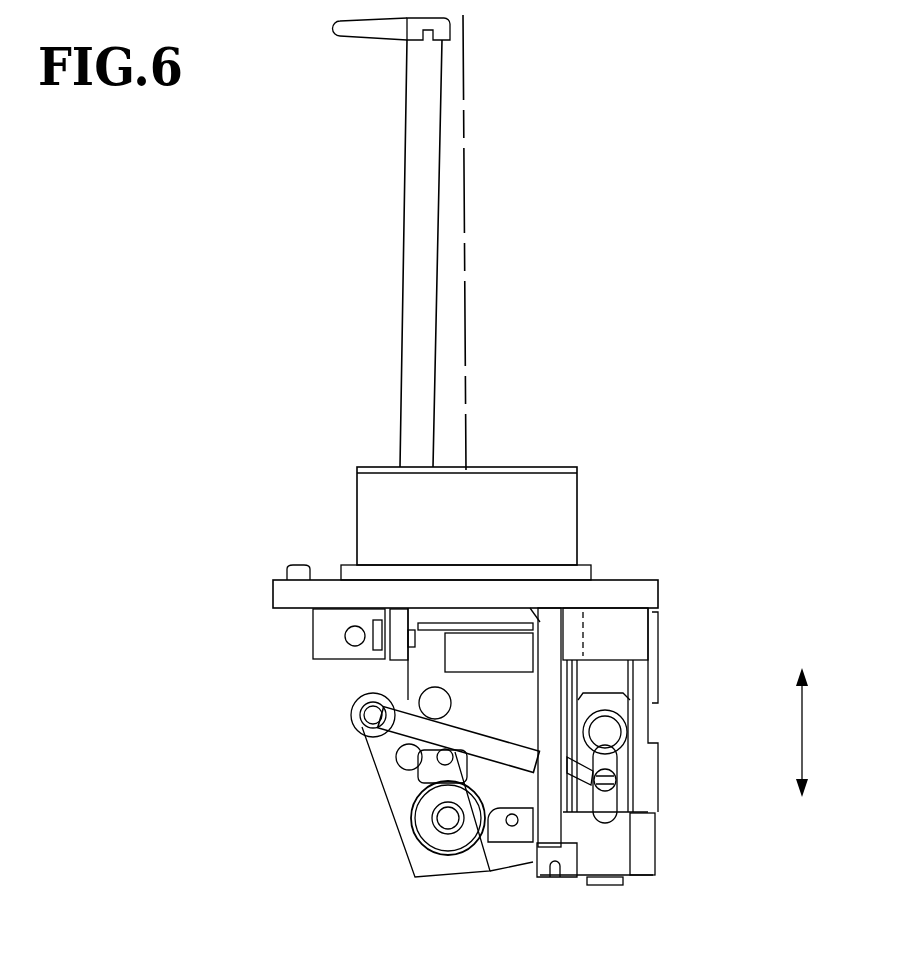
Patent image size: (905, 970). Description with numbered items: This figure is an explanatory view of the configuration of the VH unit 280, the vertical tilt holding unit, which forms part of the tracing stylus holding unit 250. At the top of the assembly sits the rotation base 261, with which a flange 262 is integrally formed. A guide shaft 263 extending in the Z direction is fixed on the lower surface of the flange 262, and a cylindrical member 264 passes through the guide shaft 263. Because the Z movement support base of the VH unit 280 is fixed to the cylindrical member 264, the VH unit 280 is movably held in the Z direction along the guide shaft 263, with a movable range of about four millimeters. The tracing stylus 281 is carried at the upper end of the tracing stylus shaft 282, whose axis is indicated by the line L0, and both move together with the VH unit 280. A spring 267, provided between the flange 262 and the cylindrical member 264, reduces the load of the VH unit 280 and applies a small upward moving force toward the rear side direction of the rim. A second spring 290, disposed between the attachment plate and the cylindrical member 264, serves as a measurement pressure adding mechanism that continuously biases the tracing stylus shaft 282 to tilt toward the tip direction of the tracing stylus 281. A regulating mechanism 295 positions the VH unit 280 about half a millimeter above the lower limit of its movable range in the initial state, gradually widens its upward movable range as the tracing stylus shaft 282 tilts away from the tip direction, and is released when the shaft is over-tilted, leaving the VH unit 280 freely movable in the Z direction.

The tracing stylus holding unit 250 is at (222, 437).
The rotation base 261 is at (563, 508).
The flange 262 is at (643, 593).
The guide shaft 263 is at (613, 640).
The cylindrical member 264 is at (620, 843).
The spring (bias member) 267 is at (547, 827).
The VH unit 280 is at (285, 702).
The tracing stylus 281 is at (358, 36).
The tracing stylus shaft 282 is at (403, 242).
The spring (bias member) 290 is at (400, 728).
The regulating mechanism 295 is at (380, 677).
The axis line L0 is at (466, 105).
The Z direction Z is at (822, 732).